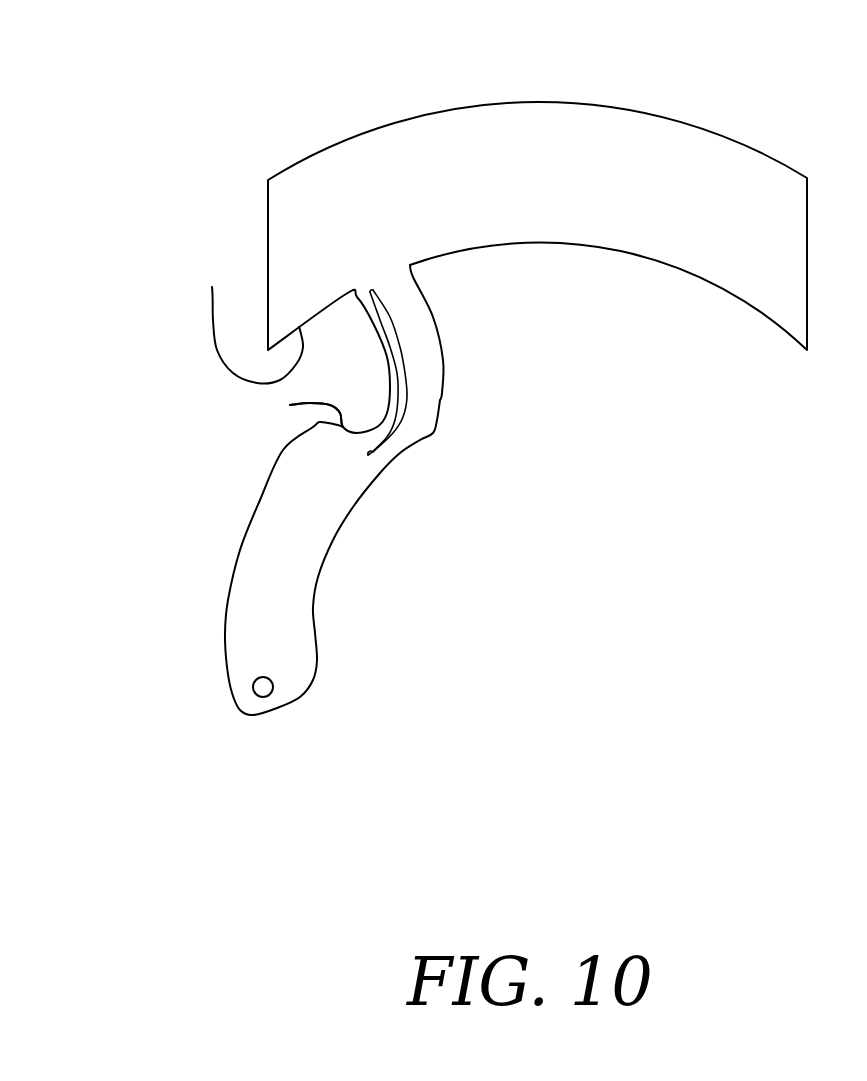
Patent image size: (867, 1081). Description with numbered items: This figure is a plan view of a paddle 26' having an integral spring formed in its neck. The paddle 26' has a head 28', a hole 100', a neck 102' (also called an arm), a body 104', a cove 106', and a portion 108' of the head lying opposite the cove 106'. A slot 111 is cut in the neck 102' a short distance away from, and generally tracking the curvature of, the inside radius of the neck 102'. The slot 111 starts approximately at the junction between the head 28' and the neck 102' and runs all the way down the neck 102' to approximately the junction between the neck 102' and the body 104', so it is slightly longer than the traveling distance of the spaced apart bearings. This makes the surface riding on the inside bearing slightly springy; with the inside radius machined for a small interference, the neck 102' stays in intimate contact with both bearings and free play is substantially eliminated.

The head 28' is at (537, 183).
The paddle 26' is at (330, 370).
The portion of the head opposite the cove 108' is at (232, 291).
The slot 111 is at (388, 312).
The cove 106' is at (171, 436).
The neck 102' is at (535, 380).
The body 104' is at (384, 568).
The hole 100' is at (155, 701).